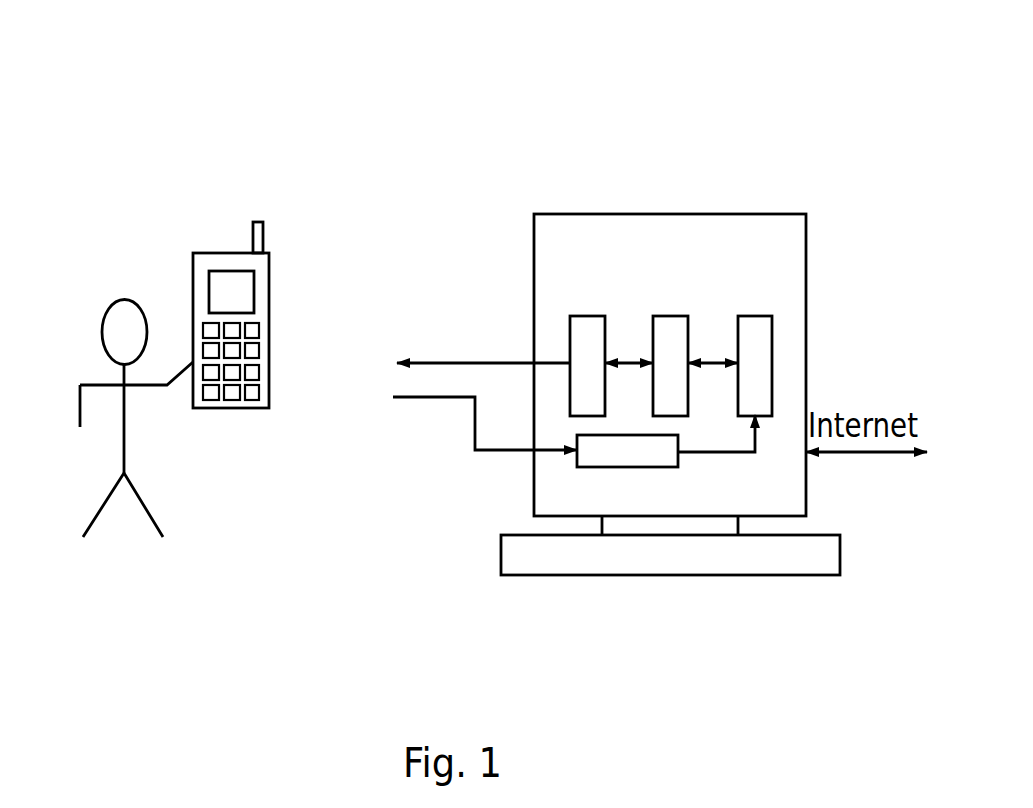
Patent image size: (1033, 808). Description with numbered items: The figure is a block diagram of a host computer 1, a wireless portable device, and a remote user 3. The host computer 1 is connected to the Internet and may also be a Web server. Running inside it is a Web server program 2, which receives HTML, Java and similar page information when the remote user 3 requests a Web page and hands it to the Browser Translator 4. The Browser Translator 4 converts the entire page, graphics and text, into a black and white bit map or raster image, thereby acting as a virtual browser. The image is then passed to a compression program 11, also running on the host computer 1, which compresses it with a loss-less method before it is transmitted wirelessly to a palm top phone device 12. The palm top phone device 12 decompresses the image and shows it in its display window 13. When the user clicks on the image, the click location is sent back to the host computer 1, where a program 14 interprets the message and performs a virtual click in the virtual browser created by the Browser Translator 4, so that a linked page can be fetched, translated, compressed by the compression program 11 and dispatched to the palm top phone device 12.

The host computer 1 is at (573, 214).
The Web server program 2 is at (752, 318).
The remote user 3 is at (132, 295).
The Browser Translator 4 is at (668, 318).
The compression program 11 is at (583, 318).
The palm top phone device 12 is at (257, 220).
The display window 13 is at (240, 295).
The click-interpreting program 14 is at (618, 459).